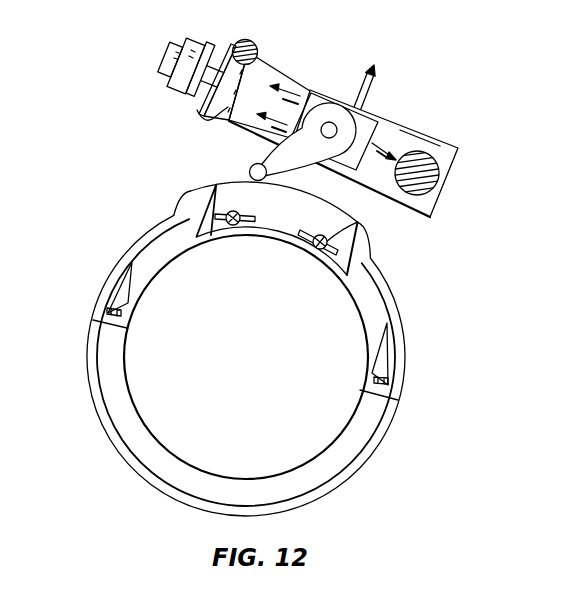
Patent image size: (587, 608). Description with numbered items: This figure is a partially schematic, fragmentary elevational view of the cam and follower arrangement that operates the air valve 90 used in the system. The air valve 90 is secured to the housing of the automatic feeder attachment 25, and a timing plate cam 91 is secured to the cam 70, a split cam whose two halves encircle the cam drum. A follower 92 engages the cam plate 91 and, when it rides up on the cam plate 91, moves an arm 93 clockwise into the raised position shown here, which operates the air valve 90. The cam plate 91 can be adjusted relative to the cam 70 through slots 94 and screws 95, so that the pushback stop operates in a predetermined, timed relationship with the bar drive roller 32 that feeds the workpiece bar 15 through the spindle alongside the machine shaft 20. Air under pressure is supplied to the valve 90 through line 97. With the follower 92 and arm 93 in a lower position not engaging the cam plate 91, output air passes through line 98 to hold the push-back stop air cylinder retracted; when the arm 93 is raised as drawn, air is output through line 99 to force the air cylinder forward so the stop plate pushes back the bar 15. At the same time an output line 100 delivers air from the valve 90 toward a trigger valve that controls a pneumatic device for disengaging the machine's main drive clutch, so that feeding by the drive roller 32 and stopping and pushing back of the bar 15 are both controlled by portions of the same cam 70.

The workpiece bar 15 is at (254, 41).
The machine shaft 20 is at (433, 157).
The automatic feeder attachment 25 is at (432, 137).
The bar drive roller 32 is at (200, 112).
The cam 70 is at (128, 428).
The air valve 90 is at (315, 100).
The timing plate cam 91 is at (297, 213).
The follower 92 is at (250, 170).
The arm 93 is at (302, 168).
The slots 94 is at (220, 213).
The screws 95 is at (237, 226).
The line 97 is at (382, 142).
The line 98 is at (268, 133).
The line 99 is at (300, 88).
The output line 100 is at (370, 98).